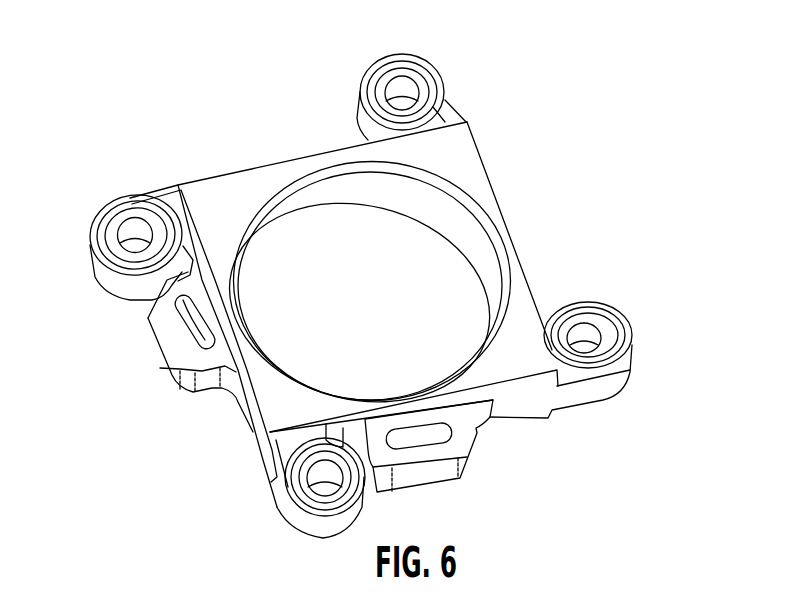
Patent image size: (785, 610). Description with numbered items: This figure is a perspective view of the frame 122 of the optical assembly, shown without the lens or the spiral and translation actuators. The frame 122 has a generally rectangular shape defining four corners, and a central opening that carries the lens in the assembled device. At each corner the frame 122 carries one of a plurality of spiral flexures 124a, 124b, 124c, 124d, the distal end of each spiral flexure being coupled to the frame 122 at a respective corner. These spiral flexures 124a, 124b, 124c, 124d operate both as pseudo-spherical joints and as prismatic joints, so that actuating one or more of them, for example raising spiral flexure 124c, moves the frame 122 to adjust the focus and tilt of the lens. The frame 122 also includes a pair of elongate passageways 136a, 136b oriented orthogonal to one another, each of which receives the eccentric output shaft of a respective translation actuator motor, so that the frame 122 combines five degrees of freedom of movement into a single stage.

The frame 122 is at (470, 172).
The spiral flexure 124a is at (80, 202).
The spiral flexure 124b is at (452, 54).
The spiral flexure 124c is at (642, 394).
The spiral flexure 124d is at (272, 522).
The elongate passageway 136a is at (185, 333).
The elongate passageway 136b is at (440, 443).